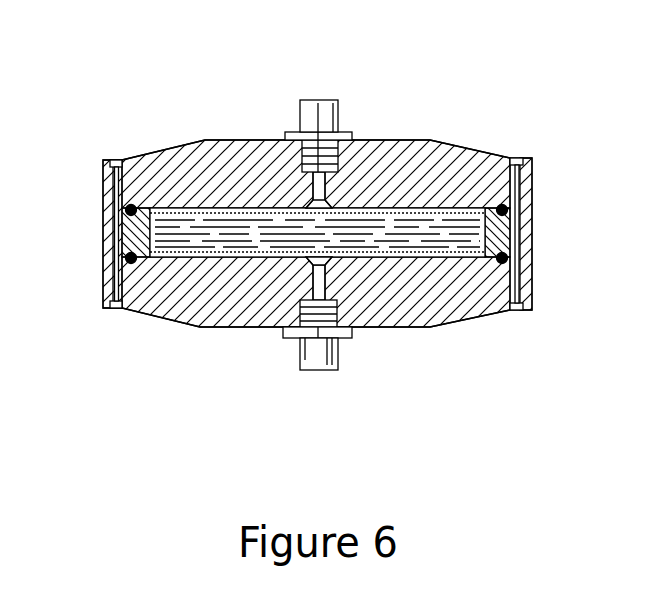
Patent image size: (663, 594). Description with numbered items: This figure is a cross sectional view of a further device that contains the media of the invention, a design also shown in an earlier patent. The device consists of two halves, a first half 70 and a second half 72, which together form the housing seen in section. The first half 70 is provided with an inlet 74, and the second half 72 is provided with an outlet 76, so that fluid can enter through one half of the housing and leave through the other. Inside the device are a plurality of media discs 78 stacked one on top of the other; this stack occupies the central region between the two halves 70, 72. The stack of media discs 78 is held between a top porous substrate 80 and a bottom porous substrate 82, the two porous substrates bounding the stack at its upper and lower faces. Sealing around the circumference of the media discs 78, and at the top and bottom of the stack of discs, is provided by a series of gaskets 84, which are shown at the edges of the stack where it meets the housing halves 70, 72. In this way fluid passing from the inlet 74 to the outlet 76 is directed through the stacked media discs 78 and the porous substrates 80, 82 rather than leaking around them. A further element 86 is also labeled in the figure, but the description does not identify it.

The first half 70 is at (150, 308).
The second half 72 is at (190, 160).
The inlet 74 is at (318, 368).
The outlet 76 is at (318, 105).
The media discs 78 is at (262, 243).
The top porous substrate 80 is at (365, 257).
The bottom porous substrate 82 is at (357, 208).
The gaskets 84 is at (502, 205).
The clamping plate 86 is at (102, 284).